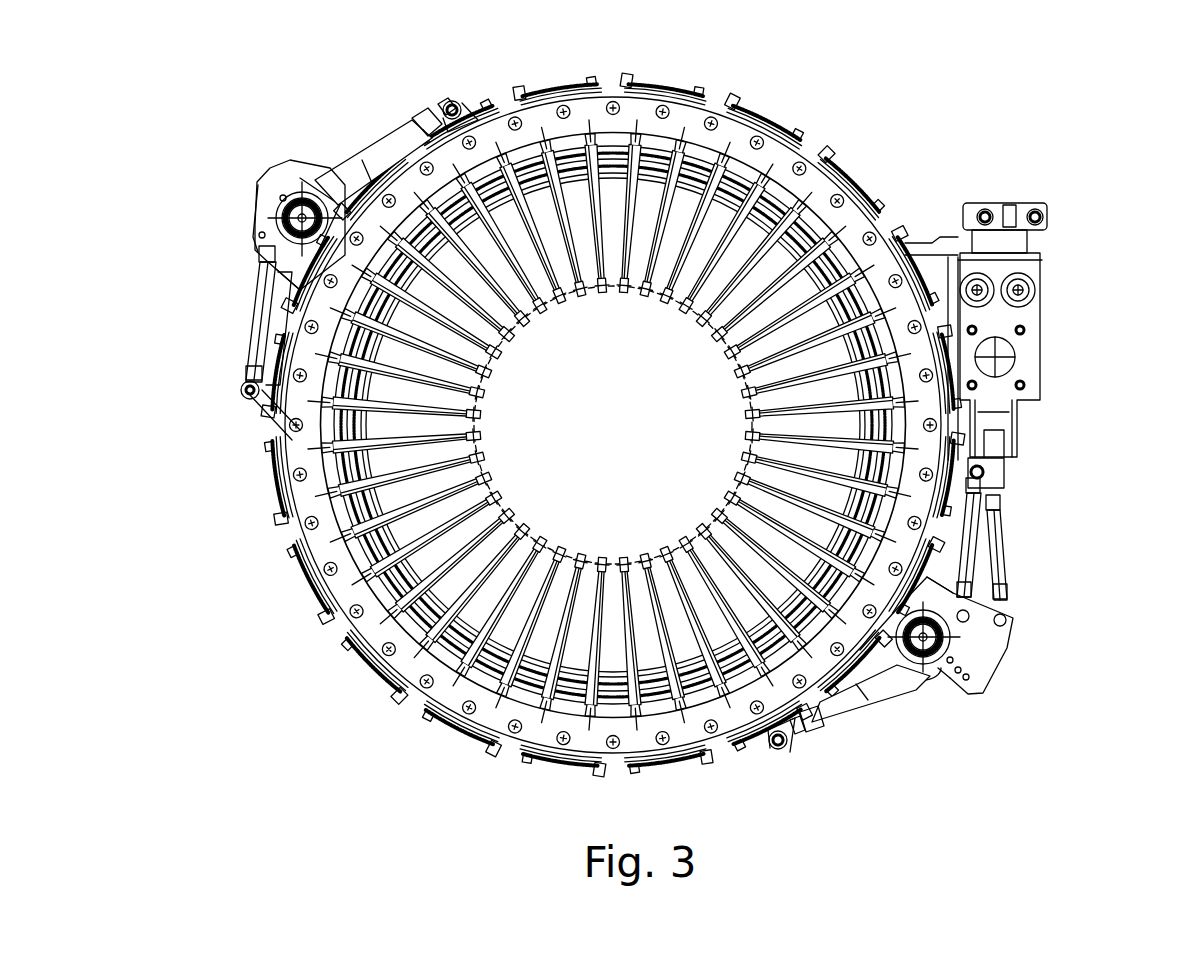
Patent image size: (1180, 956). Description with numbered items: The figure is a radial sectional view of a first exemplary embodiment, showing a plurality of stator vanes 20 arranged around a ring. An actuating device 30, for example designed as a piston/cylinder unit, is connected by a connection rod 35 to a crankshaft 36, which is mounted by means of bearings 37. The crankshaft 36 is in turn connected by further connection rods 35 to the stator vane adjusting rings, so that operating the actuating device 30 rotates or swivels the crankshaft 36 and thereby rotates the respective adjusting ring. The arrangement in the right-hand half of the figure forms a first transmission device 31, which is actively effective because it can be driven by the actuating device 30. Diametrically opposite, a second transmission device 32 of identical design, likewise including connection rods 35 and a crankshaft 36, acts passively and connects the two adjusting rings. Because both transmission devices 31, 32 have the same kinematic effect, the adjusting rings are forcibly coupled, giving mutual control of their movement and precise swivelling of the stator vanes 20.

The stator vanes 20 is at (722, 250).
The actuating device 30 is at (1106, 359).
The first transmission device 31 is at (927, 707).
The second transmission device 32 is at (229, 260).
The connection rod 35 is at (383, 142).
The crankshaft 36 is at (298, 190).
The bearings 37 is at (258, 195).